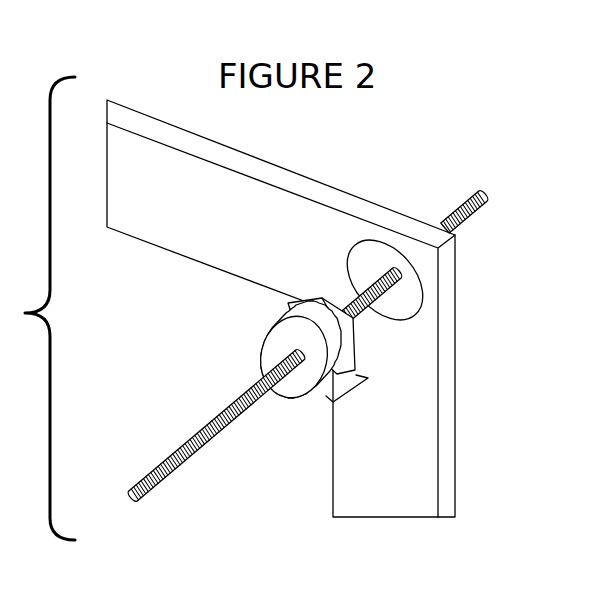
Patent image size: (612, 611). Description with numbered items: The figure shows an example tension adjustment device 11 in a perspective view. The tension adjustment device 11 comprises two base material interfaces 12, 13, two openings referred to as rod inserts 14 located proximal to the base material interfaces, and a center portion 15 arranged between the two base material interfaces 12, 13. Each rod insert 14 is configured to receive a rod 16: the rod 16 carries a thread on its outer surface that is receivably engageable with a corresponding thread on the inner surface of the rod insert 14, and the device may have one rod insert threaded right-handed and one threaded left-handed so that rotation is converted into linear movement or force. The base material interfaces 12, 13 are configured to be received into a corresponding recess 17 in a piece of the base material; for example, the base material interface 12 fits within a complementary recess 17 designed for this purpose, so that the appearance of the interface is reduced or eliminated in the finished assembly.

The tension adjustment device 11 is at (357, 391).
The base material interface 12 is at (310, 300).
The base material interface 13 is at (263, 340).
The rod insert 14 is at (303, 370).
The center portion 15 is at (340, 346).
The rod 16 is at (178, 467).
The recess 17 is at (412, 292).